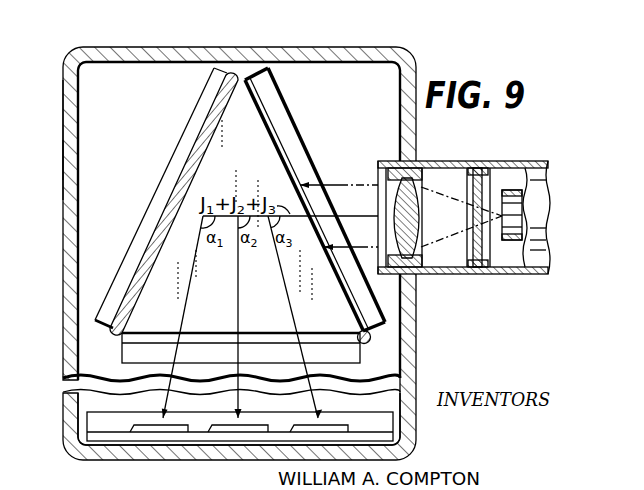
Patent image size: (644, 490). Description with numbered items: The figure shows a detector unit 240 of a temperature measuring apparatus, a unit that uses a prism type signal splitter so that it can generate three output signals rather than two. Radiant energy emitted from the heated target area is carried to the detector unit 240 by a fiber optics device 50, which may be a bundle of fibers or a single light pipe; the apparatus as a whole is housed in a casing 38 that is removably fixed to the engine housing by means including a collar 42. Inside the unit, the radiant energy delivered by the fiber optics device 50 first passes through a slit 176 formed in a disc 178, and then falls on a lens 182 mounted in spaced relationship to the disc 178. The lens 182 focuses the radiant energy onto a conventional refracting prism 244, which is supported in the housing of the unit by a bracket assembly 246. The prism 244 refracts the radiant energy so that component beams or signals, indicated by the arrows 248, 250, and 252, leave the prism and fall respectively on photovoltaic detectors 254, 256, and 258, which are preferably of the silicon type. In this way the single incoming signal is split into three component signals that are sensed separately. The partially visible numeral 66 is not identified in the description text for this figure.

The detector unit 240 is at (420, 58).
The collar 42 is at (60, 70).
The housing wall portion 66 is at (31, 160).
The bracket assembly 246 is at (187, 123).
The refracting prism 244 is at (175, 252).
The component beam 252 is at (187, 331).
The component beam 250 is at (244, 321).
The component beam 248 is at (305, 321).
The lens 182 is at (394, 165).
The slit 176 is at (478, 211).
The fiber optics device 50 is at (514, 189).
The casing 38 is at (462, 276).
The disc 178 is at (477, 275).
The photovoltaic detector 254 is at (350, 427).
The photovoltaic detector 258 is at (97, 428).
The photovoltaic detector 256 is at (205, 430).